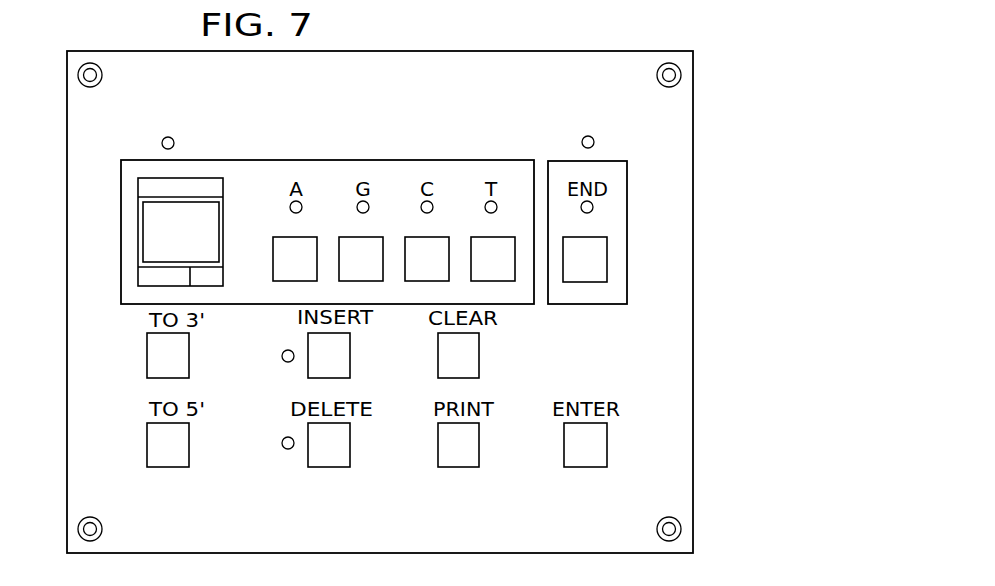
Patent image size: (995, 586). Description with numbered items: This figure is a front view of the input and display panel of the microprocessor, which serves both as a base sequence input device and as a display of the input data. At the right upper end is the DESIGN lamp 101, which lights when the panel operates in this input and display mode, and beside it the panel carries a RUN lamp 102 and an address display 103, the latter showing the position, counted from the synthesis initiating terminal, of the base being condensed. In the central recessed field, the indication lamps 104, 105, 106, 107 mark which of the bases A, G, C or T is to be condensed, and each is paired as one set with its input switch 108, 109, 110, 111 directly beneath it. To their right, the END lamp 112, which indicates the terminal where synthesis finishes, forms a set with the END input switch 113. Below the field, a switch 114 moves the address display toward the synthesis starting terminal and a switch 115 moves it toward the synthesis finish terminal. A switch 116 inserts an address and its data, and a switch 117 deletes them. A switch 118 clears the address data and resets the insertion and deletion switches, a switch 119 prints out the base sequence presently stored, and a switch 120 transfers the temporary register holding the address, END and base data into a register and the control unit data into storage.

The DESIGN lamp 101 is at (594, 142).
The run mode indicator lamp 102 is at (162, 143).
The display 103 is at (160, 231).
The indication lamp 104 is at (302, 201).
The indication lamp 105 is at (368, 201).
The indication lamp 106 is at (432, 201).
The indication lamp 107 is at (488, 202).
The input switch 108 is at (280, 252).
The input switch 109 is at (345, 252).
The input switch 110 is at (413, 247).
The input switch 111 is at (480, 245).
The END lamp 112 is at (593, 207).
The END input switch 113 is at (590, 258).
The switch 114 is at (158, 350).
The switch 115 is at (158, 442).
The switch 116 is at (335, 358).
The switch 117 is at (327, 444).
The switch 118 is at (463, 358).
The switch 119 is at (458, 449).
The switch 120 is at (595, 445).